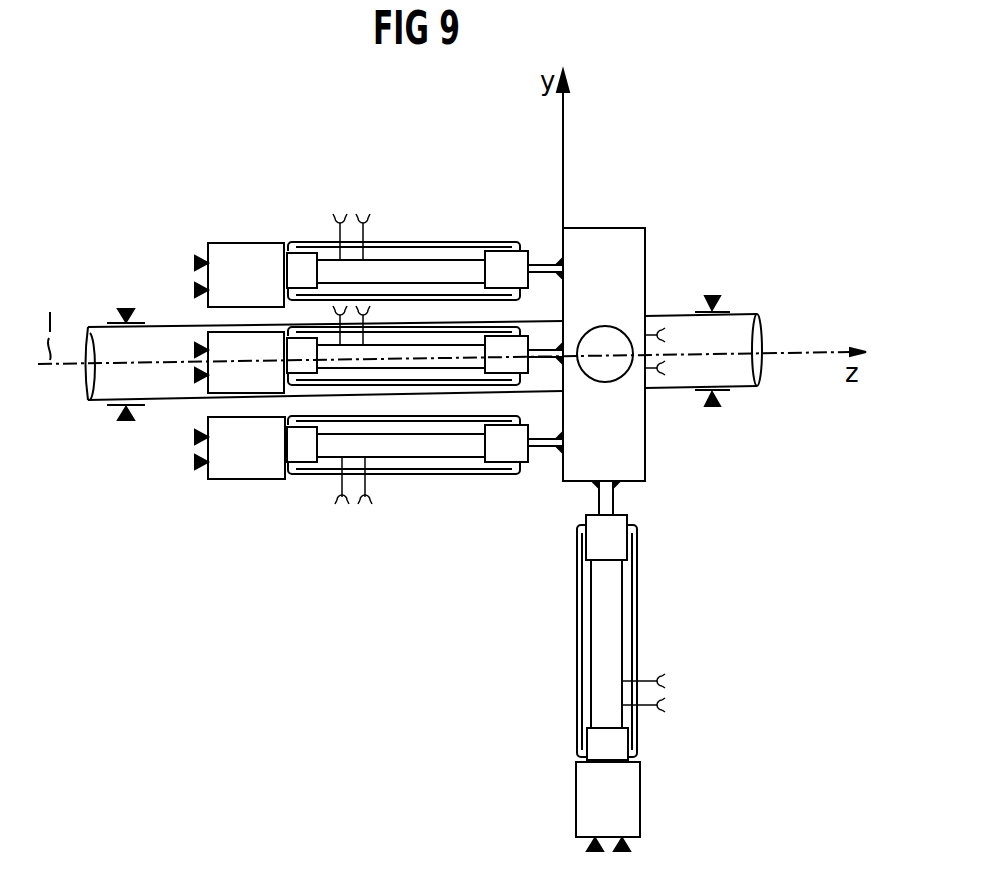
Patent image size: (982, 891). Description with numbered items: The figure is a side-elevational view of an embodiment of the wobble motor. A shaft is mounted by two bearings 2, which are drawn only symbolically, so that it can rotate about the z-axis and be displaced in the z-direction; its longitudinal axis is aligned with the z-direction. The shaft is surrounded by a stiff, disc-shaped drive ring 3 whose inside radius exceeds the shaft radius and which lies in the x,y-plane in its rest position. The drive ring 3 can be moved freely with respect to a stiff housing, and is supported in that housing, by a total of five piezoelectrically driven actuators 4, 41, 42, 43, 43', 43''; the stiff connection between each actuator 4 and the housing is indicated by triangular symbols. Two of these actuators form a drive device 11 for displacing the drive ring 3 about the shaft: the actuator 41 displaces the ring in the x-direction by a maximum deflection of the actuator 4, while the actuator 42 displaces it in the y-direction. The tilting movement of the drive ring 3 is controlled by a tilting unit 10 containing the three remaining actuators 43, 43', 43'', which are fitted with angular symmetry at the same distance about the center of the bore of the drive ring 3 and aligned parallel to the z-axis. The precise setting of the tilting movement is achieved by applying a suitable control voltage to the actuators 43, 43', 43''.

The bearings 2 is at (118, 275).
The drive ring 3 is at (597, 238).
The actuator 4 is at (511, 486).
The tilting unit 10 is at (379, 357).
The drive device 11 is at (702, 530).
The actuator 41 is at (606, 338).
The actuator 42 is at (673, 609).
The actuator 43 is at (379, 504).
The actuator 43' is at (379, 417).
The actuator 43'' is at (379, 214).